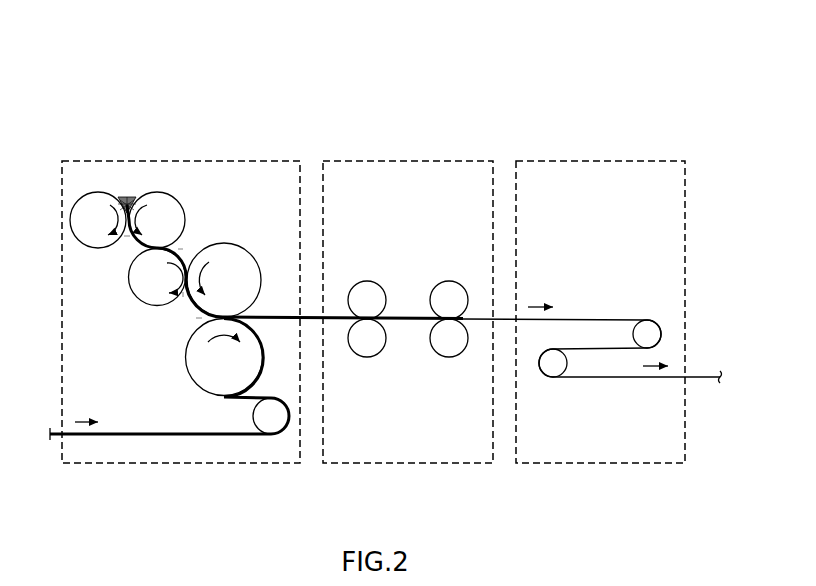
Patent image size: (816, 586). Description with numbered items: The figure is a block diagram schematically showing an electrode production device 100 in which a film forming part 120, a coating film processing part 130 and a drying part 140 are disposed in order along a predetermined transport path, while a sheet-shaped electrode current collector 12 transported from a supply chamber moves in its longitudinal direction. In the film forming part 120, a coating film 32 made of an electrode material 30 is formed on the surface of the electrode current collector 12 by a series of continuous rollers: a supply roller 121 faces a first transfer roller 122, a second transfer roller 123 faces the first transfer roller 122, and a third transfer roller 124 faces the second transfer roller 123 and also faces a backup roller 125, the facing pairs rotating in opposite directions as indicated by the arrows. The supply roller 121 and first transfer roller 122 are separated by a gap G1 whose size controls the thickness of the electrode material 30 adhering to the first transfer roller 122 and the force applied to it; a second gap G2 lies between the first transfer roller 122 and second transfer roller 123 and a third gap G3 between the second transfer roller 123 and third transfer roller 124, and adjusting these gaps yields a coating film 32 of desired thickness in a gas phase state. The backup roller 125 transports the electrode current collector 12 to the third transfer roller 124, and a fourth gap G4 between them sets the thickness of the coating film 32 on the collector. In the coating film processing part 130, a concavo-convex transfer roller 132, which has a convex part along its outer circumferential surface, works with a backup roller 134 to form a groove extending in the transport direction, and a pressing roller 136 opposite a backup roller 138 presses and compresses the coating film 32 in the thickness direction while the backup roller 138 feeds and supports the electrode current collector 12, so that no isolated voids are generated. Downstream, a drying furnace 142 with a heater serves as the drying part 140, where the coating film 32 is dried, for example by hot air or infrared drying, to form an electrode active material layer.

The electrode production device 100 is at (692, 36).
The film forming part 120 is at (258, 160).
The coating film processing part 130 is at (447, 160).
The drying part 140 is at (617, 160).
The drying furnace 142 is at (600, 348).
The supply roller 121 is at (96, 192).
The first transfer roller 122 is at (178, 199).
The second transfer roller 123 is at (132, 291).
The third transfer roller 124 is at (247, 243).
The backup roller 125 is at (195, 380).
The electrode material 30 is at (126, 200).
The coating film 32 is at (272, 316).
The electrode current collector 12 is at (273, 321).
The concavo-convex transfer roller 132 is at (446, 281).
The backup roller 134 is at (451, 358).
The pressing roller 136 is at (366, 281).
The backup roller 138 is at (365, 358).
The gap G1 is at (124, 238).
The second gap G2 is at (183, 249).
The third gap G3 is at (182, 297).
The fourth gap G4 is at (196, 320).